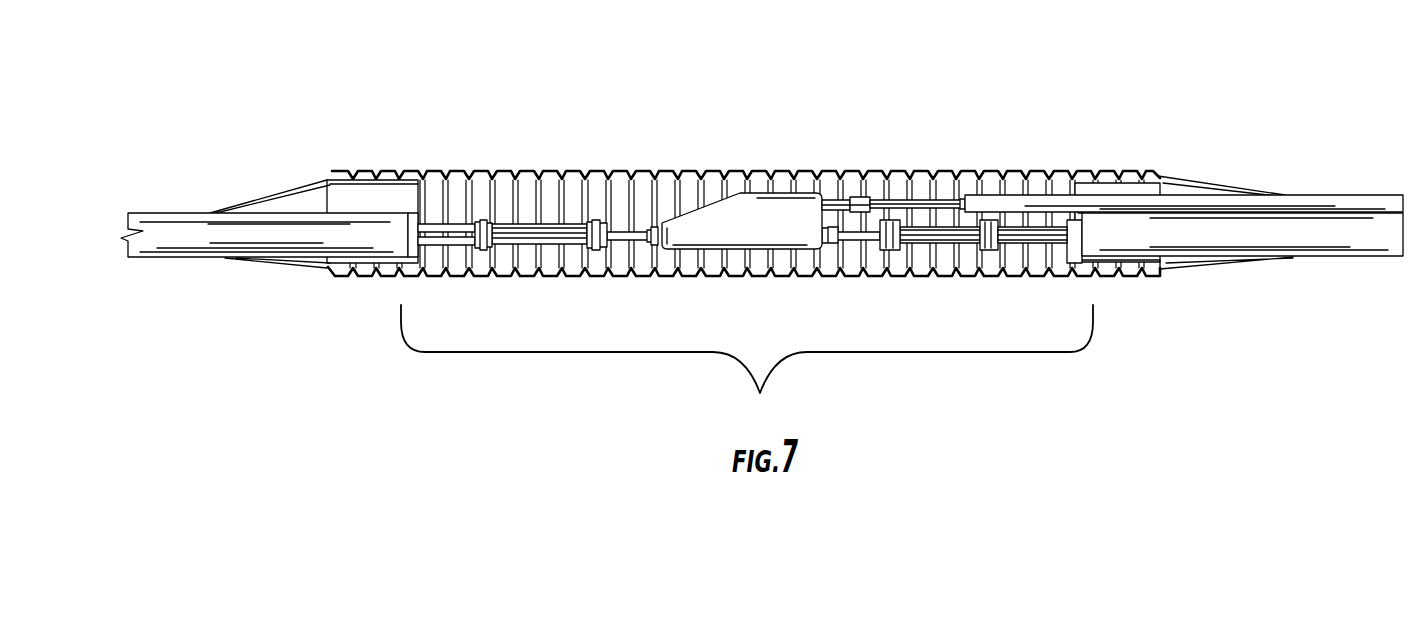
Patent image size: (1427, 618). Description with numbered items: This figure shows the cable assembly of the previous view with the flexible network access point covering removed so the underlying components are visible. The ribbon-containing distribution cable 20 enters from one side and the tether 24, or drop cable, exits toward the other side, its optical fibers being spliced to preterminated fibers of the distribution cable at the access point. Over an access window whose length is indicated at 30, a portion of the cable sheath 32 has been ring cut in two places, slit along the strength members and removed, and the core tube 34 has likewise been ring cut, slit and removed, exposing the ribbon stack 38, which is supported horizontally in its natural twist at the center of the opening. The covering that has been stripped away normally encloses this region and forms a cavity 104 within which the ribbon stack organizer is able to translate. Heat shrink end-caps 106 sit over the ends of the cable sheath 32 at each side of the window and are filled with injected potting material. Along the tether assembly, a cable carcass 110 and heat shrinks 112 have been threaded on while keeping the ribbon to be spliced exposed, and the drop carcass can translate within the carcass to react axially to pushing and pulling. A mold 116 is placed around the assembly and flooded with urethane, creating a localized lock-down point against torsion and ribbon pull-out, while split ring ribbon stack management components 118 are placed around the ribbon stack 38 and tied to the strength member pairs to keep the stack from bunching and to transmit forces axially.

The distribution cable 20 is at (151, 212).
The tether 24 is at (1287, 202).
The network access location length 30 is at (747, 368).
The cable sheath 32 is at (180, 220).
The core tube 34 is at (423, 217).
The ribbon stack 38 is at (567, 224).
The cavity 104 is at (500, 198).
The heat shrink end-caps 106 is at (300, 197).
The cable carcass 110 is at (933, 197).
The heat shrinks 112 is at (863, 198).
The mold 116 is at (745, 218).
The split ring ribbon stack management components 118 is at (603, 217).